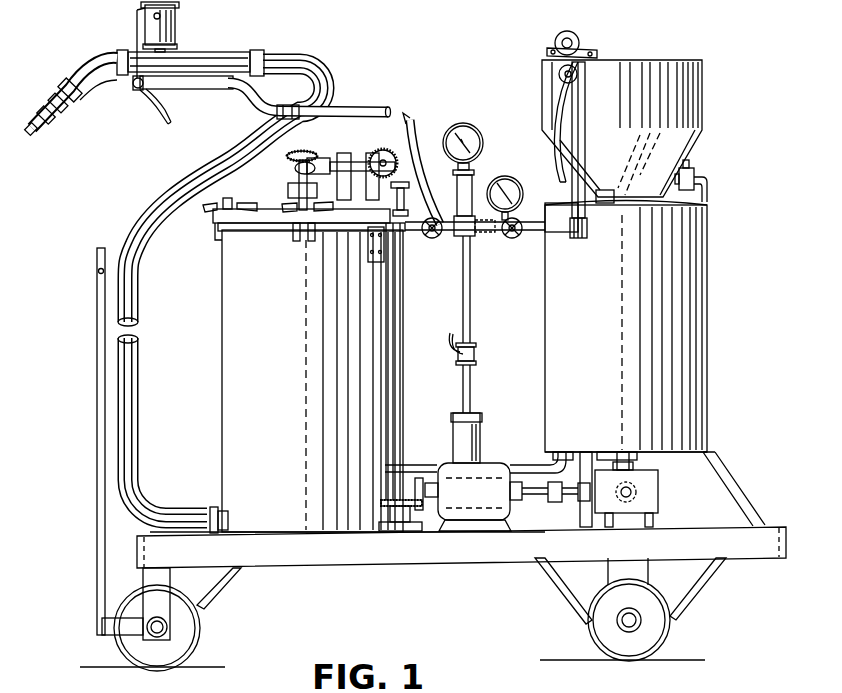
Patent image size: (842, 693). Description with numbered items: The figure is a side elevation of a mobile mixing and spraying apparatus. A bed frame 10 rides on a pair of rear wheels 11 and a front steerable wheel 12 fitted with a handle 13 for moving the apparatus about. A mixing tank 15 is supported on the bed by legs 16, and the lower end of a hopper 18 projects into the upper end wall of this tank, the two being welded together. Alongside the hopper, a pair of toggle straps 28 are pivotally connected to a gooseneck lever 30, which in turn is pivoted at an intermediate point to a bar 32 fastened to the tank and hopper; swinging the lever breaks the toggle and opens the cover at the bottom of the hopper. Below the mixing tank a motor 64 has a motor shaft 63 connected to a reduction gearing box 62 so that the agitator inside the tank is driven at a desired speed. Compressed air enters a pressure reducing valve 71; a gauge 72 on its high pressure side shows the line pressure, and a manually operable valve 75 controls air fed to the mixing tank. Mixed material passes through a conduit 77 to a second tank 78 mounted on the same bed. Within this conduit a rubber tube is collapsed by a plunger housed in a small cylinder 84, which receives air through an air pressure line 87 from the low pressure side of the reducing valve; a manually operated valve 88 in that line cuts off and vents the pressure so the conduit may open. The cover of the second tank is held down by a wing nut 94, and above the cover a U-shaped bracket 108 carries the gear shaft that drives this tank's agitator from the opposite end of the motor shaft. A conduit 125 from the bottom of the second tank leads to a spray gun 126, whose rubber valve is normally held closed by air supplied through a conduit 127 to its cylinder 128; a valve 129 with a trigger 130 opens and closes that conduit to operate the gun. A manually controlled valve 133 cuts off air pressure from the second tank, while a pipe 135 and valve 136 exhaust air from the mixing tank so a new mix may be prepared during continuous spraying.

The bed frame 10 is at (488, 558).
The rear wheels 11 is at (596, 628).
The front steerable wheel 12 is at (190, 633).
The handle 13 is at (100, 503).
The mixing tank 15 is at (695, 390).
The legs 16 is at (728, 478).
The hopper 18 is at (640, 165).
The toggle straps 28 is at (593, 48).
The gooseneck lever 30 is at (557, 152).
The bar 32 is at (588, 228).
The reduction gearing box 62 is at (655, 496).
The motor shaft 63 is at (530, 493).
The motor 64 is at (490, 512).
The pressure reducing valve 71 is at (474, 243).
The gauge 72 is at (514, 182).
The manually operable valve 75 is at (509, 240).
The conduit 77 is at (534, 440).
The second tank 78 is at (322, 419).
The small cylinder 84 is at (476, 432).
The air pressure line 87 is at (470, 380).
The manually operated valve 88 is at (474, 352).
The wing nut 94 is at (207, 207).
The U-shaped bracket 108 is at (368, 158).
The conduit 125 is at (325, 76).
The spray gun 126 is at (198, 56).
The conduit 127 is at (418, 122).
The cylinder 128 is at (175, 25).
The valve 129 is at (128, 100).
The trigger 130 is at (168, 124).
The manually controlled valve 133 is at (434, 240).
The pipe 135 is at (690, 166).
The valve 136 is at (696, 177).